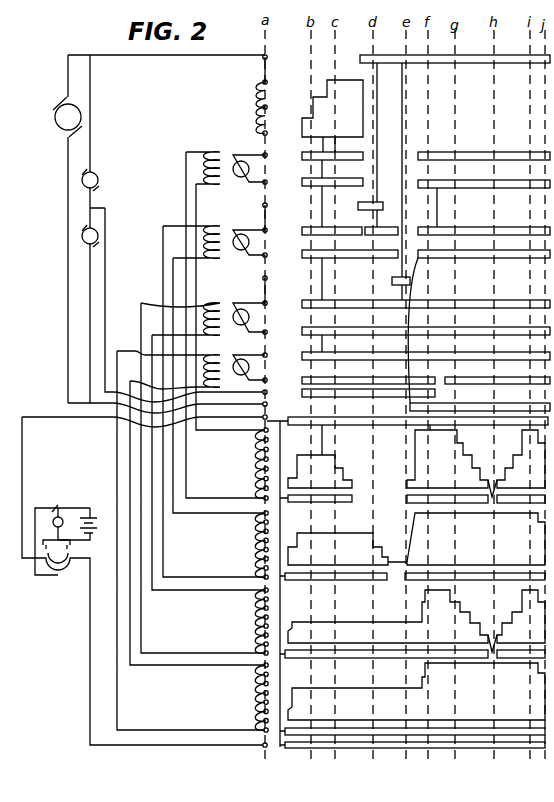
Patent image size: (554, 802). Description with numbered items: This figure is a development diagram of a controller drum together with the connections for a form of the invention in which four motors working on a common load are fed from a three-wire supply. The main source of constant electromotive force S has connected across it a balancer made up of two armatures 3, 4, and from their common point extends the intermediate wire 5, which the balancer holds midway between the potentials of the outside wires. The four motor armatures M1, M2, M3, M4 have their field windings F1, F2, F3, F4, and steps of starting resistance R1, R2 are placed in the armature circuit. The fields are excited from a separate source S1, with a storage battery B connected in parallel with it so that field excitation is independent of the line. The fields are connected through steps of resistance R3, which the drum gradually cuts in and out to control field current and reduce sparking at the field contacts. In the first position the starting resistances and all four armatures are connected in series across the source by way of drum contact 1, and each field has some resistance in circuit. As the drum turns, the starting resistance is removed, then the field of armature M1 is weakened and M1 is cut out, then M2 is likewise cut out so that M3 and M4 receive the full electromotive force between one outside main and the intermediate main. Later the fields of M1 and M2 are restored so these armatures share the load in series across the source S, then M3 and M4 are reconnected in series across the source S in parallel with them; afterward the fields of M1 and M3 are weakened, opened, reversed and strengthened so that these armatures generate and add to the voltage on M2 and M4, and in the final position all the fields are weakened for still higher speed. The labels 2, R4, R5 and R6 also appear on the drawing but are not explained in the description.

The drum contact 1 is at (332, 116).
The relay armature 2 is at (57, 561).
The balancer armature 3 is at (93, 177).
The balancer armature 4 is at (86, 242).
The intermediate wire 5 is at (184, 305).
The source of constant electromotive force S is at (67, 117).
The source of electrical energy S1 is at (49, 522).
The storage battery B is at (94, 526).
The starting resistance step R1 is at (251, 82).
The starting resistance step R2 is at (251, 120).
The field resistance step R3 is at (249, 464).
The starting resistance R4 is at (249, 545).
The starting resistance R5 is at (248, 621).
The starting resistance R6 is at (248, 697).
The field winding F1 is at (203, 158).
The field winding F2 is at (191, 232).
The field winding F3 is at (180, 309).
The field winding F4 is at (168, 362).
The motor armature M1 is at (249, 160).
The motor armature M2 is at (249, 230).
The motor armature M3 is at (249, 305).
The motor armature M4 is at (249, 360).